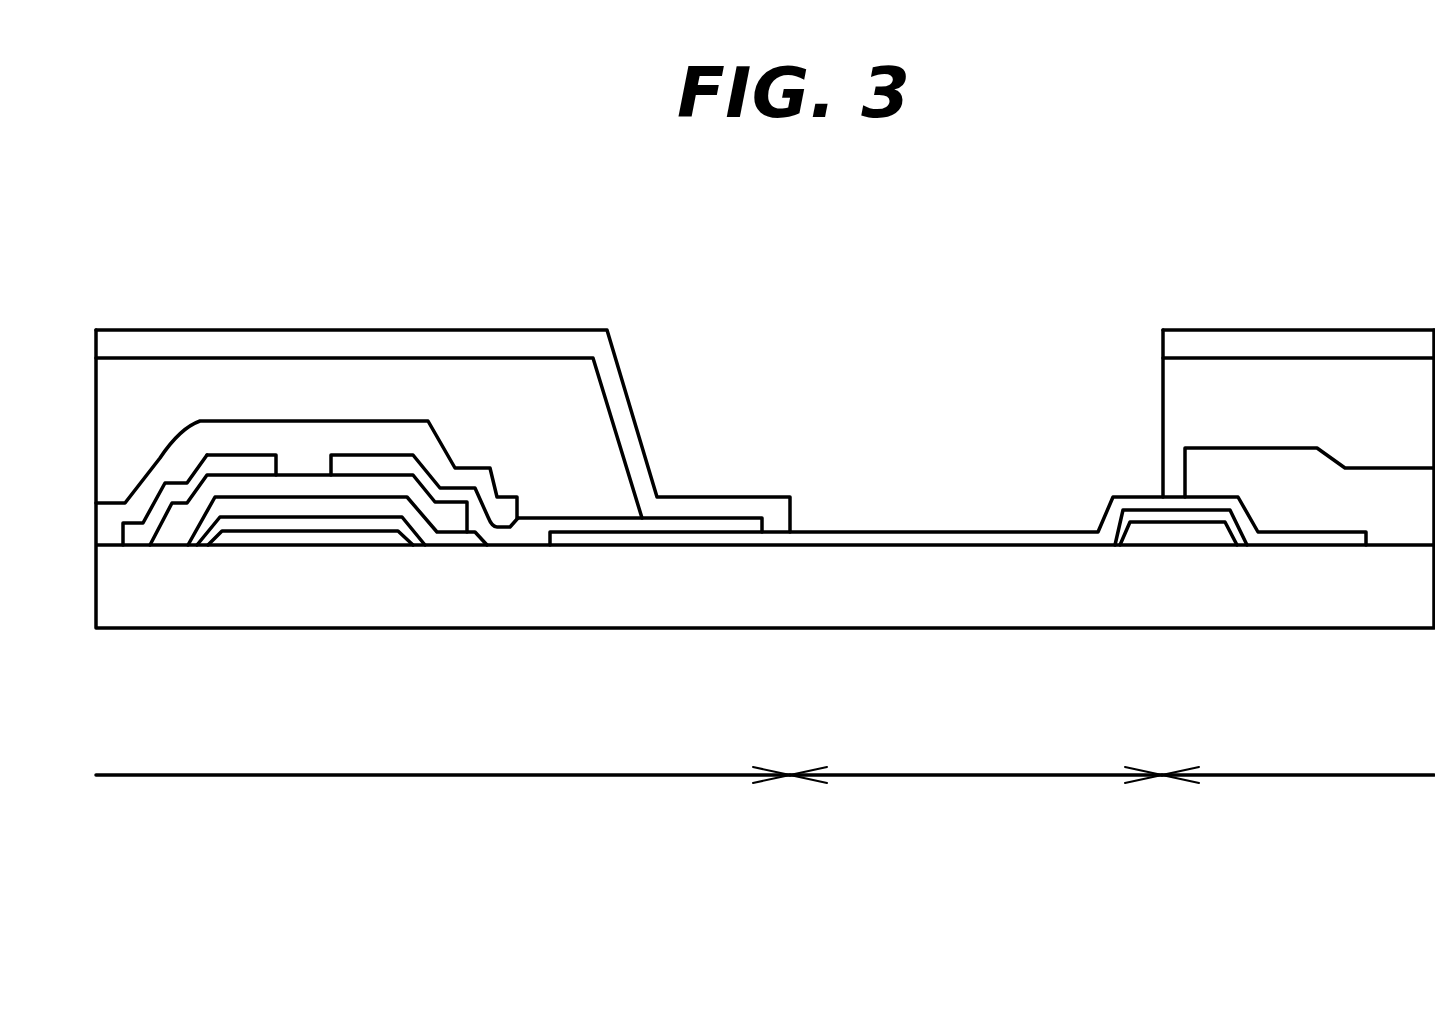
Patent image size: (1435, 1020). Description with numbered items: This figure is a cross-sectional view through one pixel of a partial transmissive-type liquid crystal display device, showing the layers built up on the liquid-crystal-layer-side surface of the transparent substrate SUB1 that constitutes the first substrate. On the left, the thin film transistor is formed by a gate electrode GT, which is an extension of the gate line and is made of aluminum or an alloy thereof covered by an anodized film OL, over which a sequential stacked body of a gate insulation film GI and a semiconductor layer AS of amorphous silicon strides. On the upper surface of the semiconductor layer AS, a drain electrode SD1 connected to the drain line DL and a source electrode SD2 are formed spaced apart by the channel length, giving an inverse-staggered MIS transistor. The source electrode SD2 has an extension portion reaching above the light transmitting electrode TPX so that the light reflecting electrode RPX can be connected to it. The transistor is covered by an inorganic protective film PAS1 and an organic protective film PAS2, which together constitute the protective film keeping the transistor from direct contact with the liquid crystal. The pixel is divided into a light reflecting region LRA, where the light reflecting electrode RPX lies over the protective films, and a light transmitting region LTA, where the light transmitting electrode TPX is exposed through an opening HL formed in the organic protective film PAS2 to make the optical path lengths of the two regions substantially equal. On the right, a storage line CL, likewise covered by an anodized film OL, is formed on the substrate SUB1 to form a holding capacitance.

The transparent substrate SUB1 is at (1358, 615).
The light reflecting electrode RPX is at (458, 345).
The organic protective film PAS2 is at (508, 400).
The inorganic protective film PAS1 is at (485, 482).
The opening HL is at (1158, 375).
The light transmitting electrode TPX is at (857, 537).
The drain line DL is at (137, 545).
The drain electrode SD1 is at (228, 457).
The source electrode SD2 is at (500, 545).
The semiconductor layer AS is at (290, 487).
The gate insulation film GI is at (268, 513).
The anodized film OL is at (307, 523).
The gate electrode GT is at (363, 540).
The storage line CL is at (1163, 537).
The light reflecting region LRA is at (765, 795).
The light transmitting region LTA is at (976, 800).